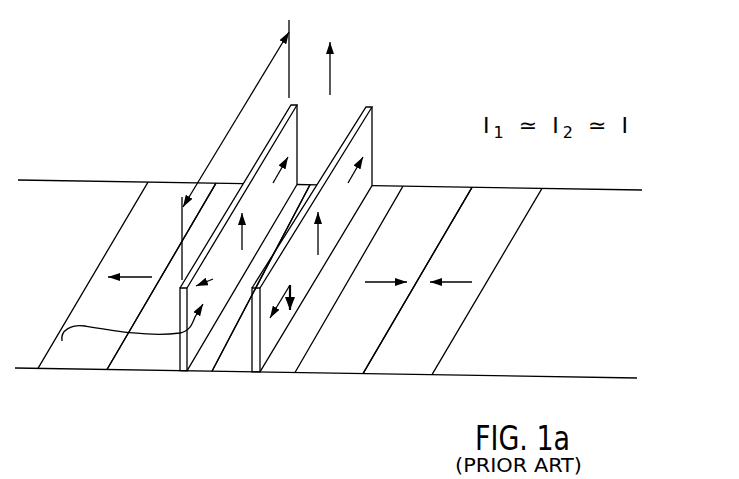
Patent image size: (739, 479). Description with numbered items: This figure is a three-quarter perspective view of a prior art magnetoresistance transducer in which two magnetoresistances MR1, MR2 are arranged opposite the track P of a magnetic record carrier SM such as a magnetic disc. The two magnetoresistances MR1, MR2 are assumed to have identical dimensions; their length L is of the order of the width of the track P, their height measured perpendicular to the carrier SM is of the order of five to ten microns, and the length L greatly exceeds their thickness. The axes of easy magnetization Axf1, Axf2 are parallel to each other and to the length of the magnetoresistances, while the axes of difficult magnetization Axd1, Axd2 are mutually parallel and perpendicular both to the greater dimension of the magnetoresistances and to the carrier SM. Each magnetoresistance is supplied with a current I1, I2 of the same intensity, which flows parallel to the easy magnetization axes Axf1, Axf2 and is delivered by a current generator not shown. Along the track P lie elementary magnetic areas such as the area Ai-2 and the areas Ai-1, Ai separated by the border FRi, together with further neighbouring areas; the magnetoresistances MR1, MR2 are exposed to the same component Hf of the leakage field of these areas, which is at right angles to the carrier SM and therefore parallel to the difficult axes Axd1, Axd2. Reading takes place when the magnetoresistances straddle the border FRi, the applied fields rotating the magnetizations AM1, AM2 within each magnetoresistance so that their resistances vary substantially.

The track P is at (608, 189).
The magnetic record carrier SM is at (532, 398).
The elementary magnetic area Ai-2 is at (88, 372).
The elementary magnetic area Ai-1 is at (163, 372).
The border FRi is at (213, 372).
The elementary magnetic area Ai is at (240, 372).
The magnetoresistance MR1 is at (279, 125).
The magnetoresistance MR2 is at (373, 108).
The length of the magnetoresistances L is at (235, 150).
The component of the magnetic leakage field Hf is at (344, 64).
The current I1 is at (274, 184).
The current I2 is at (348, 184).
The axis of difficult magnetization Axd1 is at (347, 233).
The axis of difficult magnetization Axd2 is at (240, 238).
The axis of easy magnetization Axf1 is at (286, 294).
The axis of easy magnetization Axf2 is at (132, 336).
The magnetization AM1 is at (316, 299).
The magnetization AM2 is at (222, 275).